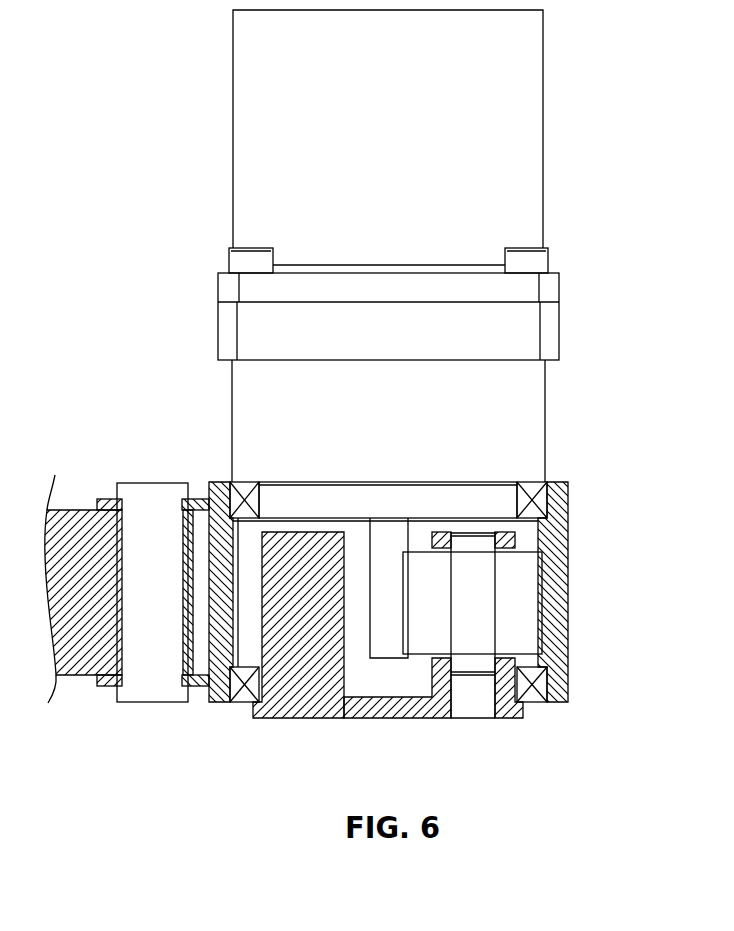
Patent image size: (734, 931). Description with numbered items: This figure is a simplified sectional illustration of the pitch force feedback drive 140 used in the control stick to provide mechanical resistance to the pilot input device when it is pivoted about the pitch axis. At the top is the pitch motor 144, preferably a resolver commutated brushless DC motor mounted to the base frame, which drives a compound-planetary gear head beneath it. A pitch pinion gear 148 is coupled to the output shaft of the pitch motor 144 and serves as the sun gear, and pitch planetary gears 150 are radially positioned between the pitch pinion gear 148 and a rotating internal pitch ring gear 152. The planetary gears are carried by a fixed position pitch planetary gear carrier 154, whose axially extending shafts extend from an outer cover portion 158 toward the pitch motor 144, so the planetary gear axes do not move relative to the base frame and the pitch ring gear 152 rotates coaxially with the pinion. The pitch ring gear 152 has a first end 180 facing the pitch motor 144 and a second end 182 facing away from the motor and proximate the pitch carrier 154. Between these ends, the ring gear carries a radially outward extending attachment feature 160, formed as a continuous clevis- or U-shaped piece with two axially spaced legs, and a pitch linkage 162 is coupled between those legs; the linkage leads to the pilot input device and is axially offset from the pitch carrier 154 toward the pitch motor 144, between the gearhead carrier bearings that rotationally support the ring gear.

The pitch force feedback drive 140 is at (655, 172).
The pitch motor 144 is at (525, 150).
The pitch pinion gear 148 is at (375, 558).
The pitch planetary gears 150 is at (522, 622).
The pitch ring gear 152 is at (552, 592).
The pitch planetary gear carrier 154 is at (298, 710).
The outer cover portion 158 is at (375, 718).
The attachment feature 160 is at (100, 685).
The pitch linkage 162 is at (73, 507).
The first end 180 is at (220, 482).
The second end 182 is at (217, 703).